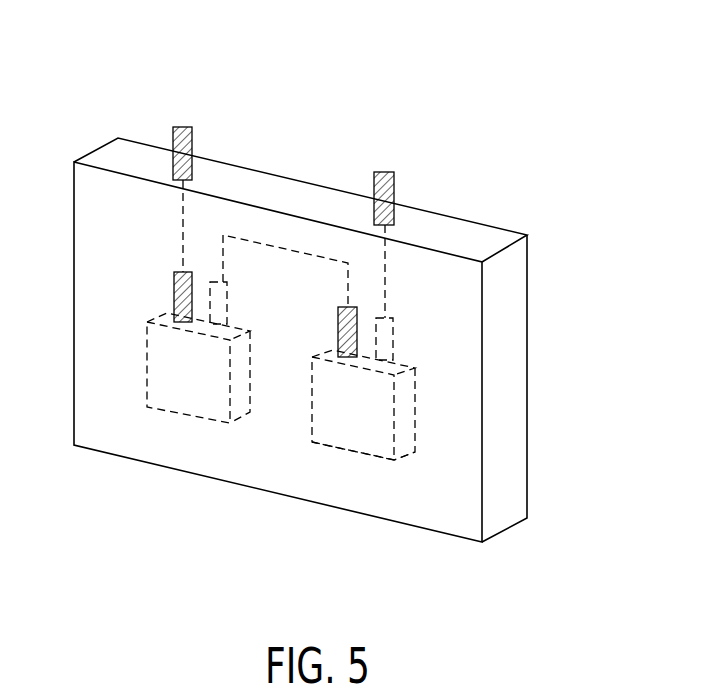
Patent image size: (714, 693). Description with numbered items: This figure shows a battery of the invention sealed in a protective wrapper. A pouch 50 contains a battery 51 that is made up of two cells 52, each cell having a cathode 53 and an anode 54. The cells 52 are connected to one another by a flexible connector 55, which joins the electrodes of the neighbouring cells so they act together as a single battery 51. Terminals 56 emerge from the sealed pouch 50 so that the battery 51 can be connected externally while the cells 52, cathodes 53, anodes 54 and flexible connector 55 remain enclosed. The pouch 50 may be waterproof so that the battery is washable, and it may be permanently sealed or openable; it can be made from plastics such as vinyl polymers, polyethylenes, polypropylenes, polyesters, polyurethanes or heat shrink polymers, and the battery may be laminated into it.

The pouch 50 is at (517, 359).
The battery 51 is at (362, 455).
The cells 52 is at (185, 385).
The cathodes 53 is at (174, 293).
The anodes 54 is at (225, 309).
The flexible connector 55 is at (285, 252).
The terminals 56 is at (383, 173).